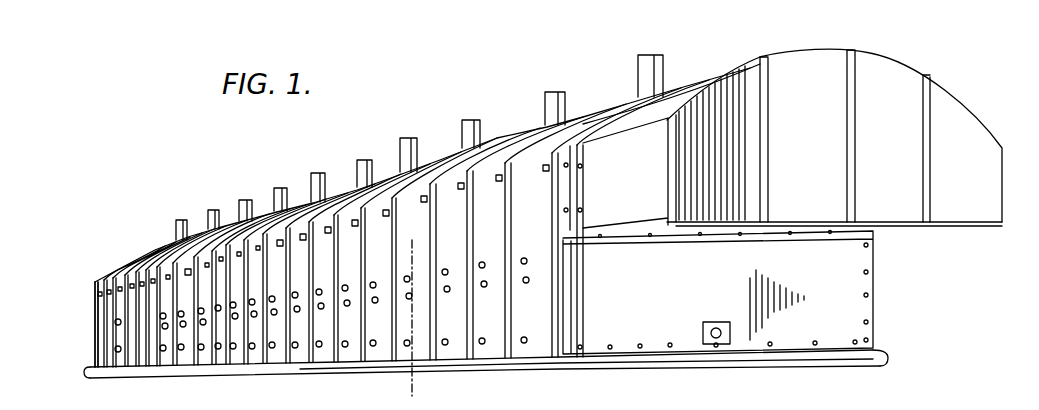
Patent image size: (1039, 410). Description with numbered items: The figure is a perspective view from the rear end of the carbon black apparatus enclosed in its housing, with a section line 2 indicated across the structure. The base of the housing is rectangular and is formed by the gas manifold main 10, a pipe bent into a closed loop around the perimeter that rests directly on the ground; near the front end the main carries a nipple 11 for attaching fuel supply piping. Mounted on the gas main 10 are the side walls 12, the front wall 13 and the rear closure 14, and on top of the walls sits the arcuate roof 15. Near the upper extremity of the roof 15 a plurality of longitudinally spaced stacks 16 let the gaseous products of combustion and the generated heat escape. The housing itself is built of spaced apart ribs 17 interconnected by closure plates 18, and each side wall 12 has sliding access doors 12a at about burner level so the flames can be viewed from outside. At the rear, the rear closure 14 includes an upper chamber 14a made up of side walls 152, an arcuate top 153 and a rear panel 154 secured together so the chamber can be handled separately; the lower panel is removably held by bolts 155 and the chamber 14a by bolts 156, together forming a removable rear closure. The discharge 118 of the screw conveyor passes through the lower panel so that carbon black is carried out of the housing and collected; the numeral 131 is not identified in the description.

The gas manifold main 10 is at (468, 362).
The nipple 11 is at (86, 373).
The side walls 12 is at (543, 307).
The sliding access doors 12a is at (457, 213).
The front wall 13 is at (88, 308).
The rear closure 14 is at (780, 230).
The upper chamber 14a is at (905, 212).
The roof 15 is at (440, 172).
The stacks 16 is at (283, 193).
The ribs 17 is at (288, 357).
The closure plates 18 is at (348, 350).
The discharge 118 is at (716, 322).
The fitting 131 is at (168, 403).
The side walls 152 is at (657, 177).
The arcuate top 153 is at (648, 126).
The rear panel 154 is at (947, 108).
The bolts 155 is at (860, 295).
The bolts 156 is at (582, 213).
The section line 2- 2 is at (424, 378).